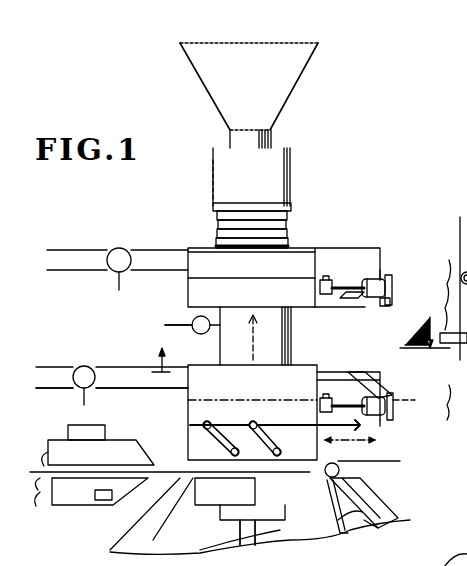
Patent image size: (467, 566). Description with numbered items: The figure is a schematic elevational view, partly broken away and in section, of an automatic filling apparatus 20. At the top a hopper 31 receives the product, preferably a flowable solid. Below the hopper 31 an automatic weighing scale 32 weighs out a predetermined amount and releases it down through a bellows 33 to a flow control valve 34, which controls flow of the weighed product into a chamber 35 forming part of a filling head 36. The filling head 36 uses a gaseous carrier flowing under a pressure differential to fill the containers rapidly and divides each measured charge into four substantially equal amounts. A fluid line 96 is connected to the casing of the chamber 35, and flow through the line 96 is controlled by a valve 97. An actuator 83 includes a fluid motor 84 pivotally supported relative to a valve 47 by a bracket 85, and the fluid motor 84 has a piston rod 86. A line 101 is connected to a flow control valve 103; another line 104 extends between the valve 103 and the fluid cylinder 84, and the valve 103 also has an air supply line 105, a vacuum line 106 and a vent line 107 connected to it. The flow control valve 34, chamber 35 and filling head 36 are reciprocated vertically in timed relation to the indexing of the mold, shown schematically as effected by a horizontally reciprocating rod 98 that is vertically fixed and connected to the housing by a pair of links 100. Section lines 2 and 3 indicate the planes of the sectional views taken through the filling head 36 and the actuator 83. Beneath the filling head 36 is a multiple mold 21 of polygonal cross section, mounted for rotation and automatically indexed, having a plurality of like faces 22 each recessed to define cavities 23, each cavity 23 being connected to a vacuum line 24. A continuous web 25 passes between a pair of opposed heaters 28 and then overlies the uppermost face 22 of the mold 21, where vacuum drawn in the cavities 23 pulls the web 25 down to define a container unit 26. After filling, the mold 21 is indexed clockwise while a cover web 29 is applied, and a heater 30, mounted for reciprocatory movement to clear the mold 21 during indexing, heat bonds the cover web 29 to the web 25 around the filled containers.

The filling apparatus 20 is at (168, 233).
The hopper 31 is at (288, 120).
The automatic weighing scale 32 is at (290, 208).
The bellows 33 is at (286, 234).
The flow control valve 34 is at (328, 262).
The chamber 35 is at (286, 352).
The filling head 36 is at (182, 427).
The valve 47 is at (306, 388).
The actuator 83 is at (391, 268).
The fluid motor 84 is at (378, 300).
The bracket 85 is at (390, 304).
The piston rod 86 is at (342, 298).
The fluid line 96 is at (182, 324).
The valve 97 is at (196, 333).
The horizontally reciprocating rod 98 is at (279, 428).
The links 100 is at (212, 432).
The line 101 is at (141, 390).
The flow control valve 103 is at (119, 248).
The line 104 is at (114, 366).
The air supply line 105 is at (50, 365).
The vacuum line 106 is at (45, 396).
The vent line 107 is at (87, 398).
The section line 2 is at (289, 396).
The section line 3 is at (421, 318).
The multiple mold 21 is at (292, 544).
The faces 22 is at (130, 534).
The cavities 23 is at (205, 490).
The vacuum line 24 is at (259, 543).
The continuous web 25 is at (165, 482).
The container unit 26 is at (373, 526).
The heaters 28 is at (53, 470).
The cover web 29 is at (366, 462).
The heater 30 is at (386, 509).